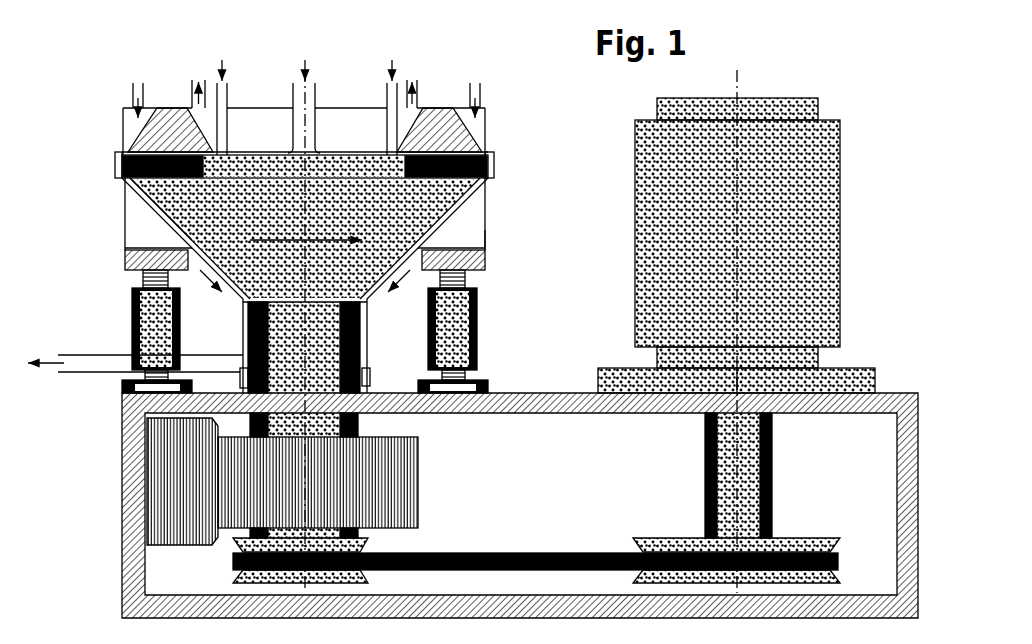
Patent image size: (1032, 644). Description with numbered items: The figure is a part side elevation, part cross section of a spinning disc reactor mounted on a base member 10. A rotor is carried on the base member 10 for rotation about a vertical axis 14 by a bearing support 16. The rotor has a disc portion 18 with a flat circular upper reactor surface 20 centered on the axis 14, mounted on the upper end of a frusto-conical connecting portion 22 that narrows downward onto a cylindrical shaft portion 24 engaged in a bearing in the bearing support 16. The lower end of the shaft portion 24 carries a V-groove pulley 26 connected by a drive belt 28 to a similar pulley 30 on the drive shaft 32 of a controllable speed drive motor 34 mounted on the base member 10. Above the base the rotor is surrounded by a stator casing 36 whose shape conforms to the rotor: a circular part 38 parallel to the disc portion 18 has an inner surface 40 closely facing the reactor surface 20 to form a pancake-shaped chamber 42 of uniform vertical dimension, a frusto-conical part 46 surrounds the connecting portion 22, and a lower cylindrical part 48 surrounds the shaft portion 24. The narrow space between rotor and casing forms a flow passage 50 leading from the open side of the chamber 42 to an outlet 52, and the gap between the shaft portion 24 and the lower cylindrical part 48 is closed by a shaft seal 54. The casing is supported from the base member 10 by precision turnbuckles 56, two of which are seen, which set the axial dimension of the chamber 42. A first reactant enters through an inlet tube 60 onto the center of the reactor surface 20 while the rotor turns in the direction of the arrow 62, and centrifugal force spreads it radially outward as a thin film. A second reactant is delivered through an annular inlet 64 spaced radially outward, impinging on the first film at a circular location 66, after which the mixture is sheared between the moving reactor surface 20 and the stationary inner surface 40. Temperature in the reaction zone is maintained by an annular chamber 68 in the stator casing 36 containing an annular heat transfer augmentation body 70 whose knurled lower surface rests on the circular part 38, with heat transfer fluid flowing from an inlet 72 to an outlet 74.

The base member 10 is at (550, 404).
The vertical axis 14 is at (300, 262).
The bearing support 16 is at (405, 480).
The disc portion 18 is at (273, 166).
The reactor surface 20 is at (226, 166).
The connecting portion 22 is at (233, 288).
The shaft portion 24 is at (246, 346).
The V-groove pulley 26 is at (380, 542).
The drive belt 28 is at (600, 552).
The pulley 30 is at (653, 543).
The drive shaft 32 is at (705, 468).
The drive motor 34 is at (652, 266).
The stator casing 36 is at (116, 161).
The circular part 38 is at (494, 158).
The inner surface 40 is at (426, 163).
The chamber 42 is at (333, 164).
The frusto-conical part 46 is at (158, 232).
The lower cylindrical part 48 is at (367, 316).
The flow passage 50 is at (165, 213).
The outlet 52 is at (106, 355).
The shaft seal 54 is at (370, 372).
The precision turnbuckles 56 is at (133, 305).
The inlet tube 60 is at (304, 94).
The arrow 62 is at (296, 240).
The inlet 64 is at (304, 95).
The circular location 66 is at (386, 164).
The annular chamber 68 is at (124, 113).
The heat transfer augmentation body 70 is at (167, 127).
The inlet 72 is at (303, 78).
The outlet 74 is at (302, 86).